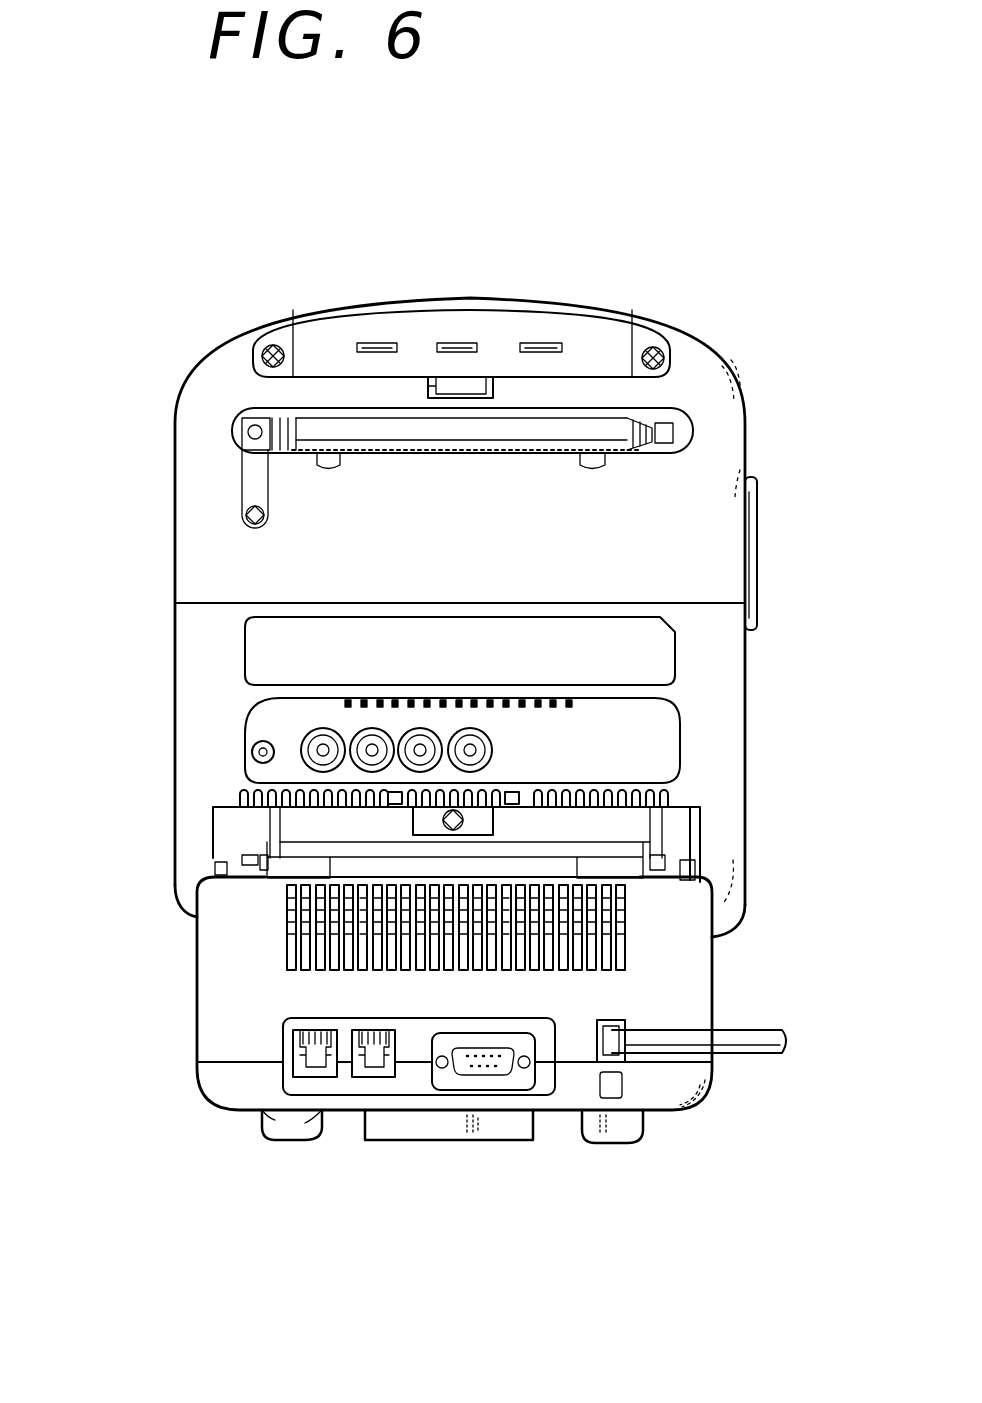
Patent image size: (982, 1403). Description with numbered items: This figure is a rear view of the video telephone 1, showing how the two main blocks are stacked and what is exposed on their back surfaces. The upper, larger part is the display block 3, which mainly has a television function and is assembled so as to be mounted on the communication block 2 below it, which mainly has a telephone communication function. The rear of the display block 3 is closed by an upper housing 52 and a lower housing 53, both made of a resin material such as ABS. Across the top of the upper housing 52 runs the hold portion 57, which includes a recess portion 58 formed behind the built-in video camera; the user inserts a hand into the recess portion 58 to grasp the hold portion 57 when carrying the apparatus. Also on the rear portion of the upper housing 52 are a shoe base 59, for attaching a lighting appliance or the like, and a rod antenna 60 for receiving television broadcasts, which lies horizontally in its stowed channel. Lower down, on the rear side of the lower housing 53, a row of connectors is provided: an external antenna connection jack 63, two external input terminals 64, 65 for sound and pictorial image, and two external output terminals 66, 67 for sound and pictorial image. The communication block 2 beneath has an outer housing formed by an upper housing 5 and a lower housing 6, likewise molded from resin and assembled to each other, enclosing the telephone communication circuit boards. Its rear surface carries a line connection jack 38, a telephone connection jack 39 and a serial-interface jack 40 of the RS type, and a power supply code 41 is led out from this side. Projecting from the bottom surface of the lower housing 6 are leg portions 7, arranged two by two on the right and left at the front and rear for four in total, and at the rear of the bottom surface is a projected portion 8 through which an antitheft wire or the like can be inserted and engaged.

The video telephone 1 is at (183, 330).
The communication block 2 is at (197, 982).
The display block 3 is at (172, 793).
The upper housing 5 is at (218, 1022).
The lower housing 6 is at (232, 1073).
The leg portion 7 is at (270, 1128).
The projected portion 8 is at (452, 1125).
The line connection jack 38 is at (318, 1070).
The telephone connection jack 39 is at (372, 1070).
The RS-232C jack 40 is at (487, 1068).
The power supply code 41 is at (737, 1052).
The upper housing 52 is at (712, 462).
The lower housing 53 is at (713, 745).
The hold portion 57 is at (500, 305).
The recess portion 58 is at (445, 325).
The shoe base 59 is at (400, 385).
The rod antenna 60 is at (572, 428).
The external antenna connection jack 63 is at (258, 750).
The external input terminal 64 is at (322, 747).
The external input terminal 65 is at (371, 747).
The external output terminal 66 is at (422, 747).
The external output terminal 67 is at (472, 745).